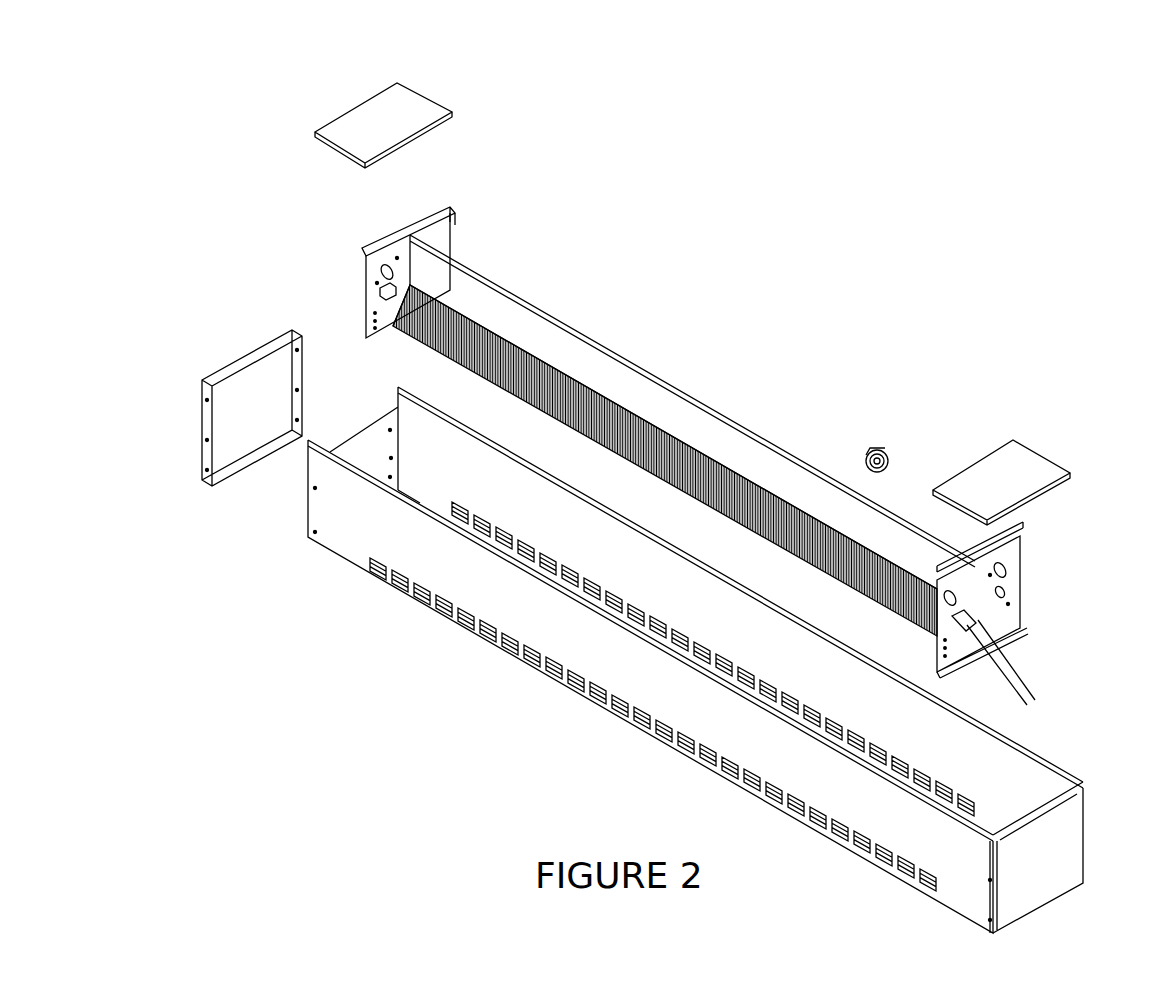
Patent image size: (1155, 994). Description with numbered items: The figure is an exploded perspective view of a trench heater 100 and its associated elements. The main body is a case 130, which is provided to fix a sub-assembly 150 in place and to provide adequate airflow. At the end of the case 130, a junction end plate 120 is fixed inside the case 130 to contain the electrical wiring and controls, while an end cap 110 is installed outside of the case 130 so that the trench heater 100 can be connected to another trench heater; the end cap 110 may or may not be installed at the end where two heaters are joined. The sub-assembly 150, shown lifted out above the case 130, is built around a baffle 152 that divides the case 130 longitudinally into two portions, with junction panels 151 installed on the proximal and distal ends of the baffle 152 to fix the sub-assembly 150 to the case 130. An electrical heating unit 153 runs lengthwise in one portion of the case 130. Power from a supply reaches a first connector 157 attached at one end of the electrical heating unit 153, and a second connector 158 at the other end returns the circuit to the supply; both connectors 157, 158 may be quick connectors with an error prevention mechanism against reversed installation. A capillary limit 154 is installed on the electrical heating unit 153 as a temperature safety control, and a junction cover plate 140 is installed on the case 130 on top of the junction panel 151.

The trench heater 100 is at (292, 675).
The end cap 110 is at (260, 447).
The junction end plate 120 is at (375, 452).
The case 130 is at (597, 652).
The junction cover plate 140 is at (362, 112).
The sub-assembly 150 is at (700, 298).
The junction panel 151 is at (422, 207).
The baffle 152 is at (472, 258).
The electrical heating unit 153 is at (495, 327).
The capillary limit 154 is at (882, 455).
The first connector 157 is at (370, 288).
The second connector 158 is at (1007, 655).